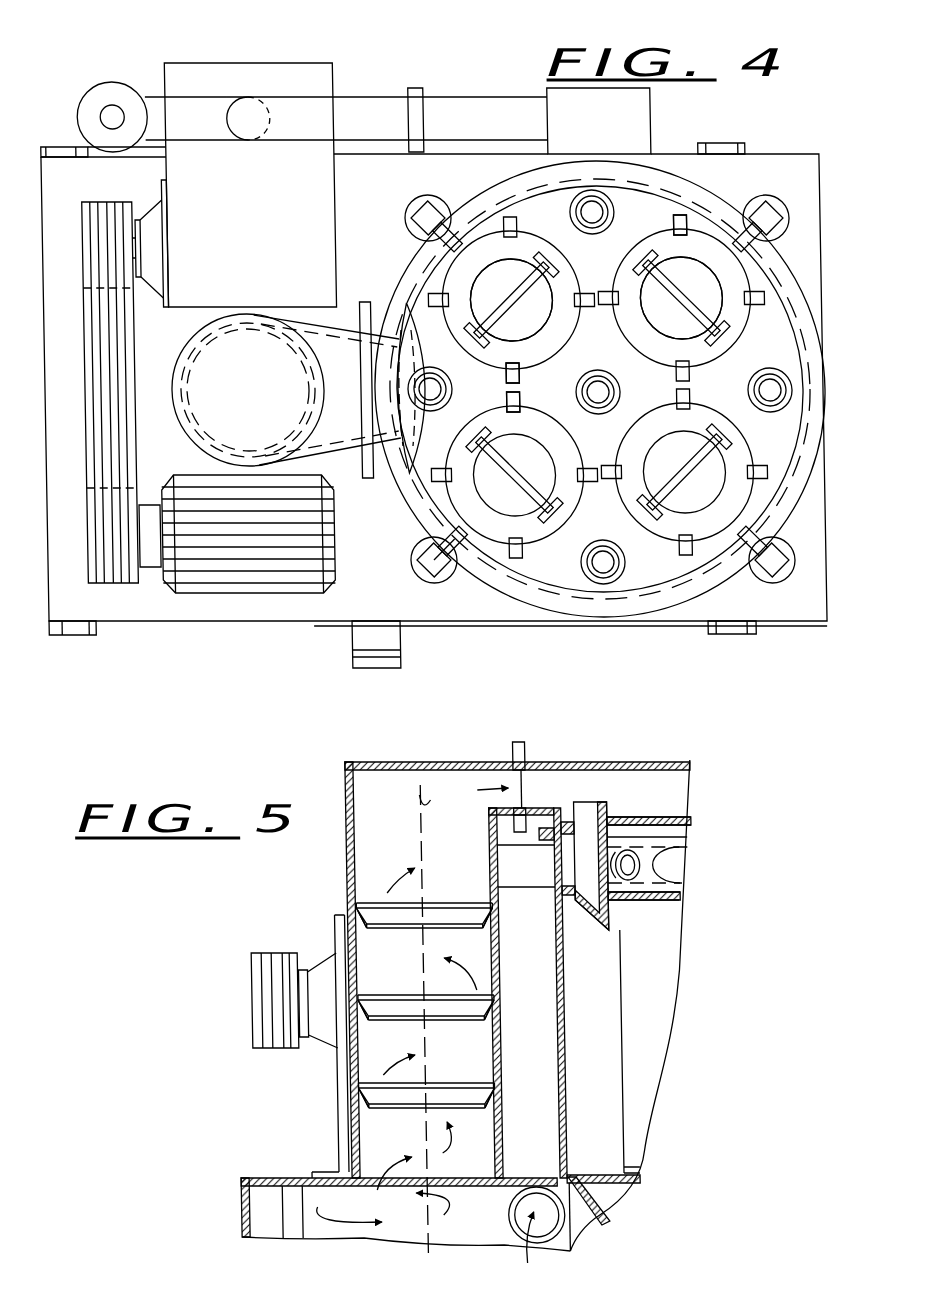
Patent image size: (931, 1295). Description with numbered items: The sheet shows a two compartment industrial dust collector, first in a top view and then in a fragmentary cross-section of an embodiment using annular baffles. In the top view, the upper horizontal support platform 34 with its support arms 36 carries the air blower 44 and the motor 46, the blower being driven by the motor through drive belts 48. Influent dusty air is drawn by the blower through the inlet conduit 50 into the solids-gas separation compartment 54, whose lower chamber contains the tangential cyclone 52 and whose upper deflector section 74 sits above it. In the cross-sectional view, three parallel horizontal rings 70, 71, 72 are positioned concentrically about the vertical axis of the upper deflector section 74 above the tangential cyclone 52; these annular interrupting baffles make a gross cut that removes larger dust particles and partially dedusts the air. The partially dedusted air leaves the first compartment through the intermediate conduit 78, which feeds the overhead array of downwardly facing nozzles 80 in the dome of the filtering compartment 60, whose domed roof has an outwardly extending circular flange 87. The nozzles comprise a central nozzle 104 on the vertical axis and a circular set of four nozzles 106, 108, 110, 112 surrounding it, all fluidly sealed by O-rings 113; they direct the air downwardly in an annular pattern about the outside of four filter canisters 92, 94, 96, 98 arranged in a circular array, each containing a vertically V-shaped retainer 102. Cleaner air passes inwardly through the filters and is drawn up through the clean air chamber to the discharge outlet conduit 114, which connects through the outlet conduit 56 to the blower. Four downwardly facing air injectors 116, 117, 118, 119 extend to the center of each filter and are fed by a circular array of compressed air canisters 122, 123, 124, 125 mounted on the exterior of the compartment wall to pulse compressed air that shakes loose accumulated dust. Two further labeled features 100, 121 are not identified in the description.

In FIG. 4, the support platform 34 is at (45, 566).
In FIG. 4, the support arms 36 is at (727, 143).
In FIG. 4, the air blower 44 is at (254, 63).
In FIG. 5, the air blower 44 is at (341, 960).
In FIG. 4, the motor 46 is at (241, 595).
In FIG. 4, the drive belts 48 is at (87, 443).
In FIG. 5, the drive belts 48 is at (275, 953).
In FIG. 4, the inlet conduit 50 is at (398, 648).
In FIG. 5, the inlet conduit 50 is at (504, 1222).
In FIG. 5, the tangential cyclone 52 is at (300, 1200).
In FIG. 4, the solids-gas separation compartment 54 is at (177, 378).
In FIG. 4, the outlet conduit 56 is at (373, 93).
In FIG. 4, the filtering compartment 60 is at (547, 583).
In FIG. 5, the horizontal ring 70 is at (368, 1108).
In FIG. 5, the horizontal ring 71 is at (370, 1018).
In FIG. 5, the horizontal ring 72 is at (370, 926).
In FIG. 5, the upper deflector section 74 is at (357, 862).
In FIG. 4, the intermediate conduit 78 is at (370, 303).
In FIG. 4, the downwardly facing nozzles 80 is at (628, 392).
In FIG. 4, the circular flange 87 is at (636, 613).
In FIG. 4, the filter canister 92 is at (628, 258).
In FIG. 4, the filter canister 94 is at (633, 430).
In FIG. 4, the filter canister 96 is at (570, 343).
In FIG. 4, the filter canister 98 is at (570, 513).
In FIG. 4, the bore 100 is at (721, 289).
In FIG. 4, the V-shaped retainer 102 is at (498, 313).
In FIG. 4, the central nozzle 104 is at (577, 392).
In FIG. 4, the nozzle 106 is at (623, 200).
In FIG. 4, the nozzle 108 is at (748, 390).
In FIG. 4, the nozzle 110 is at (620, 566).
In FIG. 4, the nozzle 112 is at (450, 390).
In FIG. 5, the nozzle 112 is at (616, 805).
In FIG. 4, the O-rings 113 is at (580, 212).
In FIG. 4, the discharge outlet conduit 114 is at (660, 127).
In FIG. 4, the air injector 116 is at (422, 211).
In FIG. 4, the air injector 117 is at (757, 205).
In FIG. 4, the air injector 118 is at (772, 569).
In FIG. 4, the air injector 119 is at (418, 566).
In FIG. 4, the roller 121 is at (452, 560).
In FIG. 4, the compressed air canister 122 is at (410, 212).
In FIG. 5, the compressed air canister 122 is at (632, 878).
In FIG. 4, the compressed air canister 123 is at (783, 204).
In FIG. 4, the compressed air canister 124 is at (772, 580).
In FIG. 4, the compressed air canister 125 is at (403, 550).